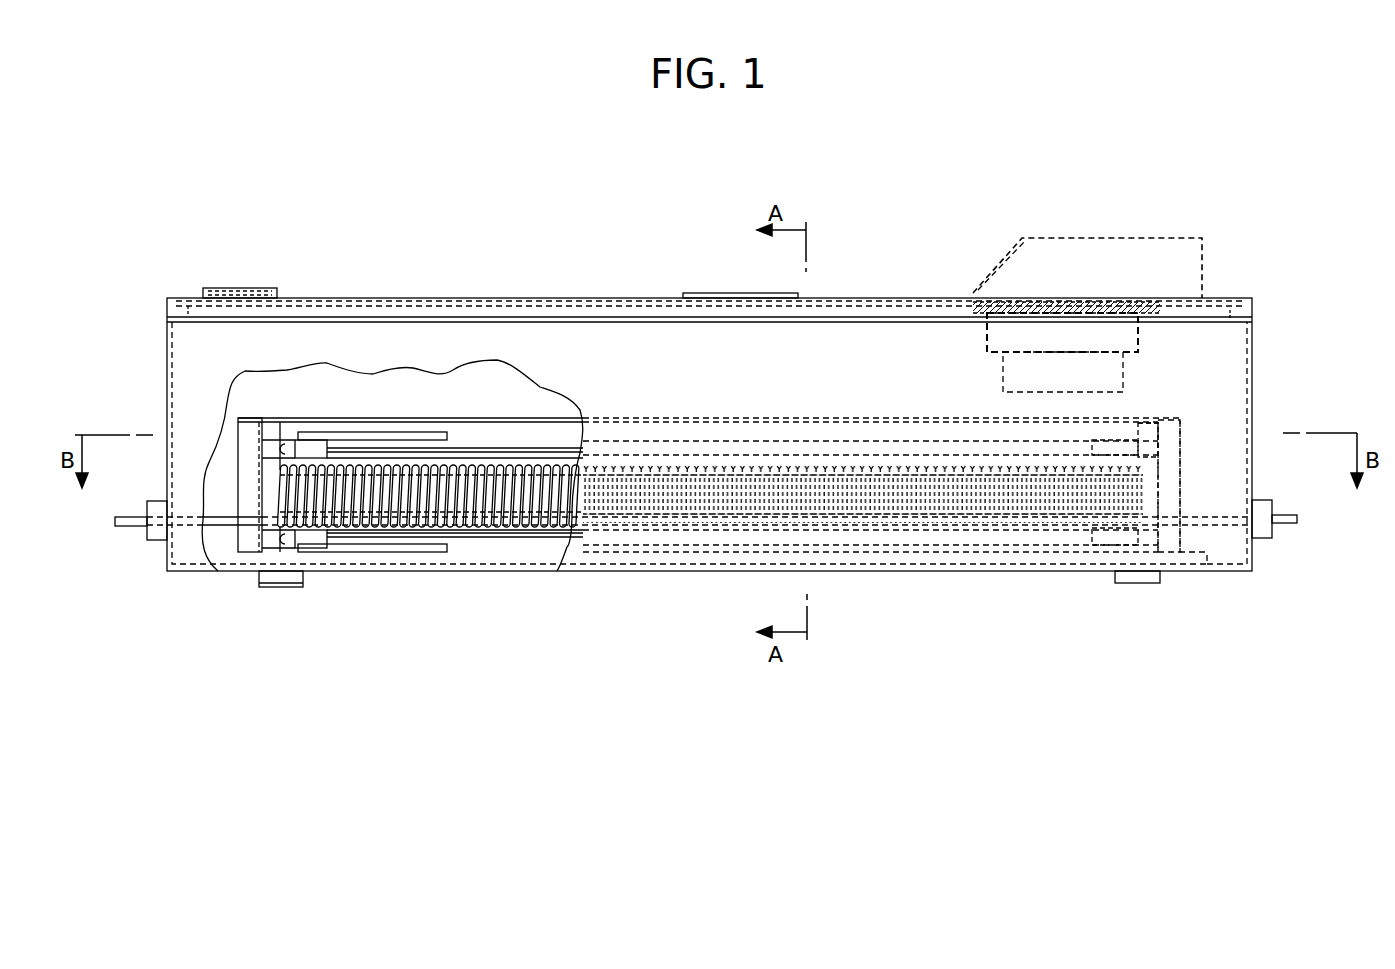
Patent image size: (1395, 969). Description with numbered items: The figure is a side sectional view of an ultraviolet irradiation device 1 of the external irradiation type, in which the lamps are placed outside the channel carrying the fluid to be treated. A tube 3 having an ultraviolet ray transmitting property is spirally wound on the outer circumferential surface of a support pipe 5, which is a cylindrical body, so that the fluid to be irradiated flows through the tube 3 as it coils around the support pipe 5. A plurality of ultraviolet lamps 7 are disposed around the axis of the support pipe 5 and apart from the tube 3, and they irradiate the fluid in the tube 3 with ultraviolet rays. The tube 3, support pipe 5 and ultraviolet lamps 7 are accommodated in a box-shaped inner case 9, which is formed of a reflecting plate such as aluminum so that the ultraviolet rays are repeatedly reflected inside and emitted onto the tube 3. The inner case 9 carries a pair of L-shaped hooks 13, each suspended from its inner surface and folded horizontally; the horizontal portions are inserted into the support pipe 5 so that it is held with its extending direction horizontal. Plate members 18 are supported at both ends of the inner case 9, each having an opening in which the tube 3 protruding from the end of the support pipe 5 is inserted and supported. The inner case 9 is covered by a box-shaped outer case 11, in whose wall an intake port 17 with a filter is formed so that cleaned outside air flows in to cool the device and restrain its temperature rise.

The ultraviolet irradiation device 1 is at (390, 370).
The tube 3 is at (907, 465).
The support pipe 5 is at (1053, 523).
The ultraviolet lamps 7 is at (598, 441).
The inner case 9 is at (640, 418).
The outer case 11 is at (1252, 360).
The hooks 13 is at (1160, 428).
The intake port 17 is at (1120, 238).
The plate members 18 is at (1160, 470).